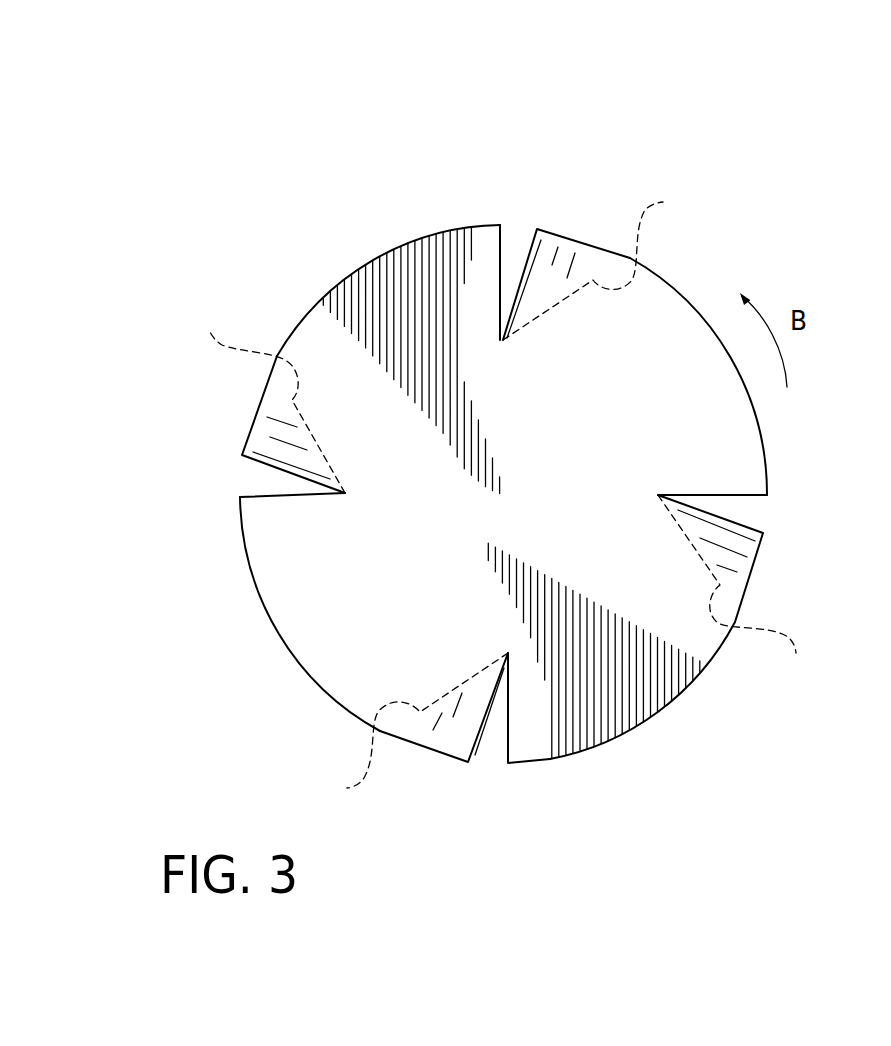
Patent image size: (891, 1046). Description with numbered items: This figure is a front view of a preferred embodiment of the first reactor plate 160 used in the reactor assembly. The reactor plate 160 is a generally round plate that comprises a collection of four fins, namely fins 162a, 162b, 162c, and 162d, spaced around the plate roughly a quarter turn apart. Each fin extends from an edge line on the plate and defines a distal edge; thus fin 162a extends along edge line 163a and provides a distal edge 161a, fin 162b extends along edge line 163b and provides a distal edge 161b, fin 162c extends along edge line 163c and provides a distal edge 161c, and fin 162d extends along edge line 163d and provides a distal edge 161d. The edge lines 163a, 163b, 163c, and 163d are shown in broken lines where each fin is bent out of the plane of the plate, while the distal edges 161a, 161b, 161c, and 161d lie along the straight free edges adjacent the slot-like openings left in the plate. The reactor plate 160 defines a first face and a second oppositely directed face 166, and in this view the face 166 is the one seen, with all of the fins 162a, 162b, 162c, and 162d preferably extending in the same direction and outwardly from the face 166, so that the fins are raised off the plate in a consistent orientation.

The first reactor plate 160 is at (325, 172).
The distal edge 161a is at (522, 268).
The distal edge 161b is at (733, 520).
The distal edge 161c is at (485, 730).
The distal edge 161d is at (275, 470).
The fin 162a is at (551, 270).
The fin 162b is at (723, 550).
The fin 162c is at (455, 717).
The fin 162d is at (275, 445).
The edge line 163a is at (610, 263).
The edge line 163b is at (740, 591).
The edge line 163c is at (399, 730).
The edge line 163d is at (265, 395).
The second oppositely directed face 166 is at (622, 420).